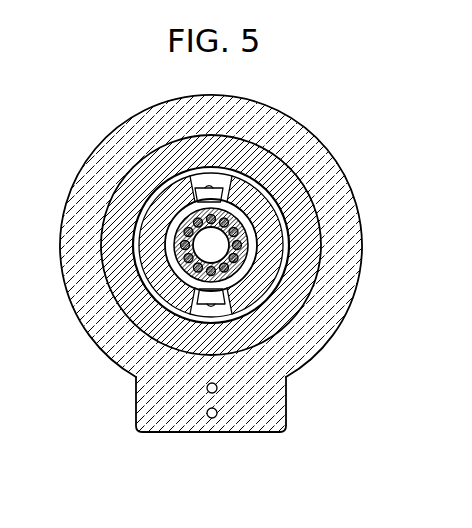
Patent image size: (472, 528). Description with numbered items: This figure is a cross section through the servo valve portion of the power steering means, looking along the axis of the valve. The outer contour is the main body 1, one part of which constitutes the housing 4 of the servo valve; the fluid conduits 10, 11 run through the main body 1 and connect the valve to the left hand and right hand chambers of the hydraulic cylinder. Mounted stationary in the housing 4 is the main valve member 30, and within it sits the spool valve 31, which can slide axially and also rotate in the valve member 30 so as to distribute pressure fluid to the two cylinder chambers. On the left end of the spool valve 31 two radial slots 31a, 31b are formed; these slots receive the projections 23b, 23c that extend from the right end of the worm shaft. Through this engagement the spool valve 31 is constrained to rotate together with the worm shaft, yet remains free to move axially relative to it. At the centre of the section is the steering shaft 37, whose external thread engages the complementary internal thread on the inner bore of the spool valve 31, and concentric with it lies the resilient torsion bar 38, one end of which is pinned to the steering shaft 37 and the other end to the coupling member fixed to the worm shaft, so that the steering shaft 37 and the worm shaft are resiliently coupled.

The main body 1 is at (128, 138).
The housing 4 is at (150, 178).
The fluid conduit 10 is at (213, 419).
The fluid conduit 11 is at (139, 401).
The projection 23b is at (220, 186).
The projection 23c is at (236, 302).
The main valve member 30 is at (302, 305).
The spool valve 31 is at (268, 190).
The radial slot 31a is at (197, 173).
The radial slot 31b is at (229, 300).
The steering shaft 37 is at (319, 223).
The torsion bar 38 is at (212, 243).